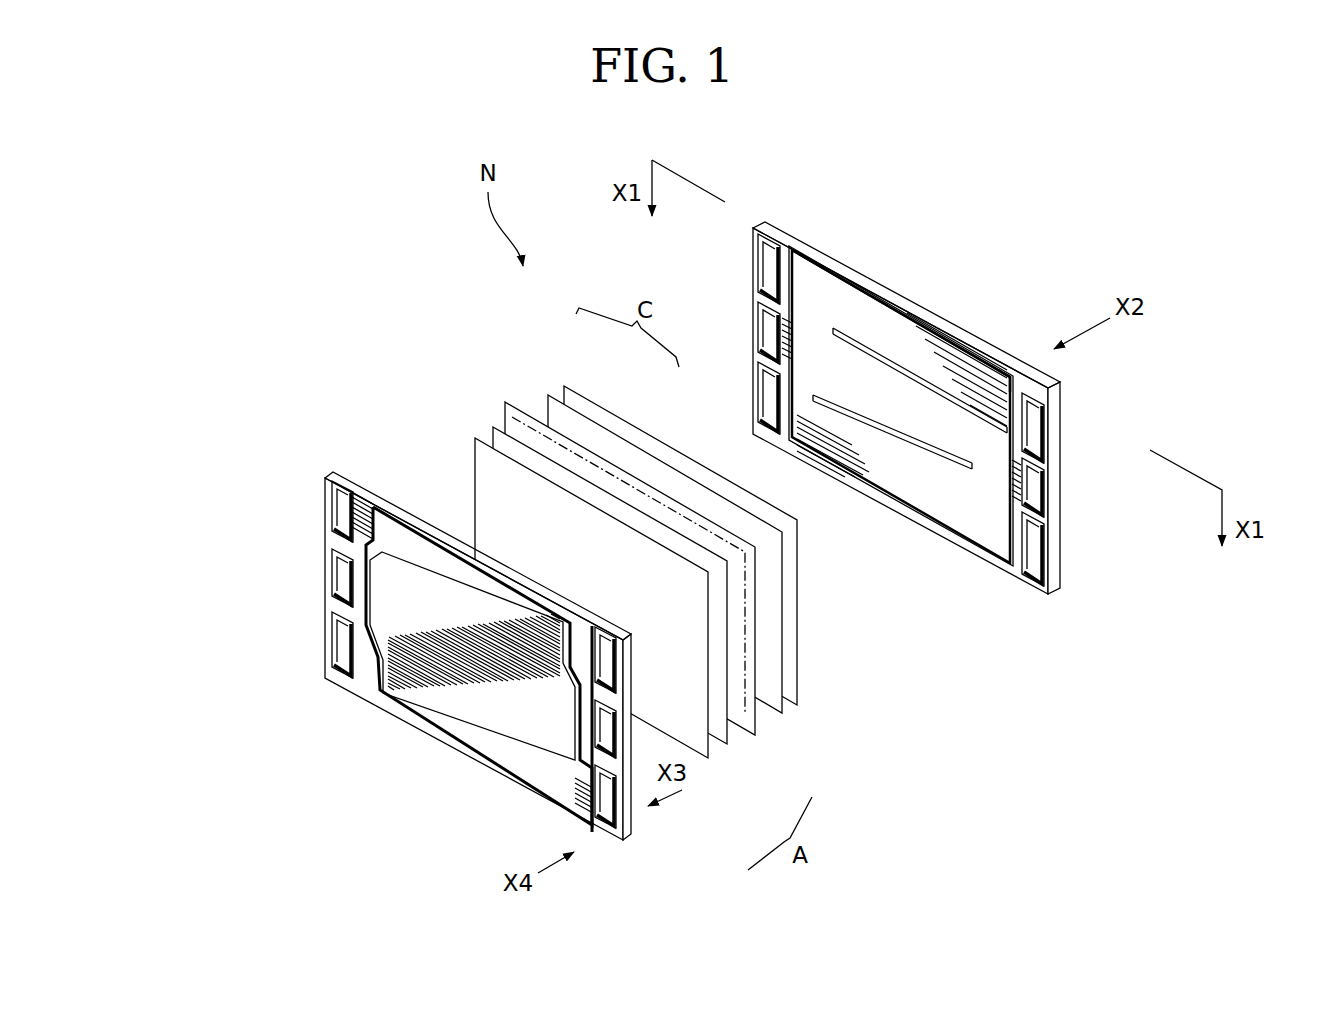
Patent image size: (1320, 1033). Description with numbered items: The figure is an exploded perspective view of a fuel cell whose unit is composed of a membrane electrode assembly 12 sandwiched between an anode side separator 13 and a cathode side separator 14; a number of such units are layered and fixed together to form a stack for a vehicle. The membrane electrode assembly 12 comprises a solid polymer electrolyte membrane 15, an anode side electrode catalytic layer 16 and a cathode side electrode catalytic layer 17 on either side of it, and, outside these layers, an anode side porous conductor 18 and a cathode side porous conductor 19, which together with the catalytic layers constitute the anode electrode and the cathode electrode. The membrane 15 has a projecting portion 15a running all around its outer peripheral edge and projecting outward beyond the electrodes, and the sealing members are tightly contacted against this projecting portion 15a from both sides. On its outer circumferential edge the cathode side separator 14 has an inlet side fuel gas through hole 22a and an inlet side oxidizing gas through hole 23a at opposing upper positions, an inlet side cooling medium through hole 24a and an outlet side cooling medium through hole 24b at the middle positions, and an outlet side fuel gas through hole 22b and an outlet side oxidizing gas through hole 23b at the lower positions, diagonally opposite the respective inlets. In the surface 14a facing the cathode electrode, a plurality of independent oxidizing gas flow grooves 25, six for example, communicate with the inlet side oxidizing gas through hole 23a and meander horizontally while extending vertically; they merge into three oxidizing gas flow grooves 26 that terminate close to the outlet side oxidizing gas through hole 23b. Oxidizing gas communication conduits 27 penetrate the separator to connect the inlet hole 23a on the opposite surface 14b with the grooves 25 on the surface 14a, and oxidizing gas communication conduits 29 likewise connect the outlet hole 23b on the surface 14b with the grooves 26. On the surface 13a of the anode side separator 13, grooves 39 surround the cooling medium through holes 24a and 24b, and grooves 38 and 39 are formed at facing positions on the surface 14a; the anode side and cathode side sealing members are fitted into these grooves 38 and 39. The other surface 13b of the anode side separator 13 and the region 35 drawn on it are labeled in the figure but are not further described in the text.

The membrane electrode assembly 12 is at (406, 424).
The anode side separator 13 is at (435, 607).
The surface of the anode side separator 13a is at (518, 586).
The outer surface of first separator 13b is at (353, 497).
The cathode side separator 14 is at (930, 373).
The surface of the cathode side separator 14a is at (845, 272).
The surface of the cathode side separator 14b is at (885, 290).
The solid polymer electrolyte membrane 15 is at (762, 735).
The projecting portion 15a is at (756, 607).
The anode side electrode catalytic layer 16 is at (728, 744).
The cathode side electrode catalytic layer 17 is at (600, 440).
The anode side porous conductor 18 is at (700, 758).
The cathode side porous conductor 19 is at (640, 438).
The inlet side fuel gas through hole 22a is at (337, 515).
The outlet side fuel gas through hole 22b is at (600, 827).
The inlet side oxidizing gas through hole 23a is at (605, 640).
The outlet side oxidizing gas through hole 23b is at (337, 640).
The inlet side cooling medium through hole 24a is at (337, 573).
The outlet side cooling medium through hole 24b is at (610, 737).
The oxidizing gas flow grooves 25 is at (978, 375).
The oxidizing gas flow grooves 26 is at (823, 447).
The oxidizing gas communication conduits 27 is at (1012, 376).
The oxidizing gas communication conduits 29 is at (800, 437).
The oxygen-containing gas flow field 35 is at (497, 723).
The grooves 38 is at (1000, 352).
The grooves 39 is at (757, 222).